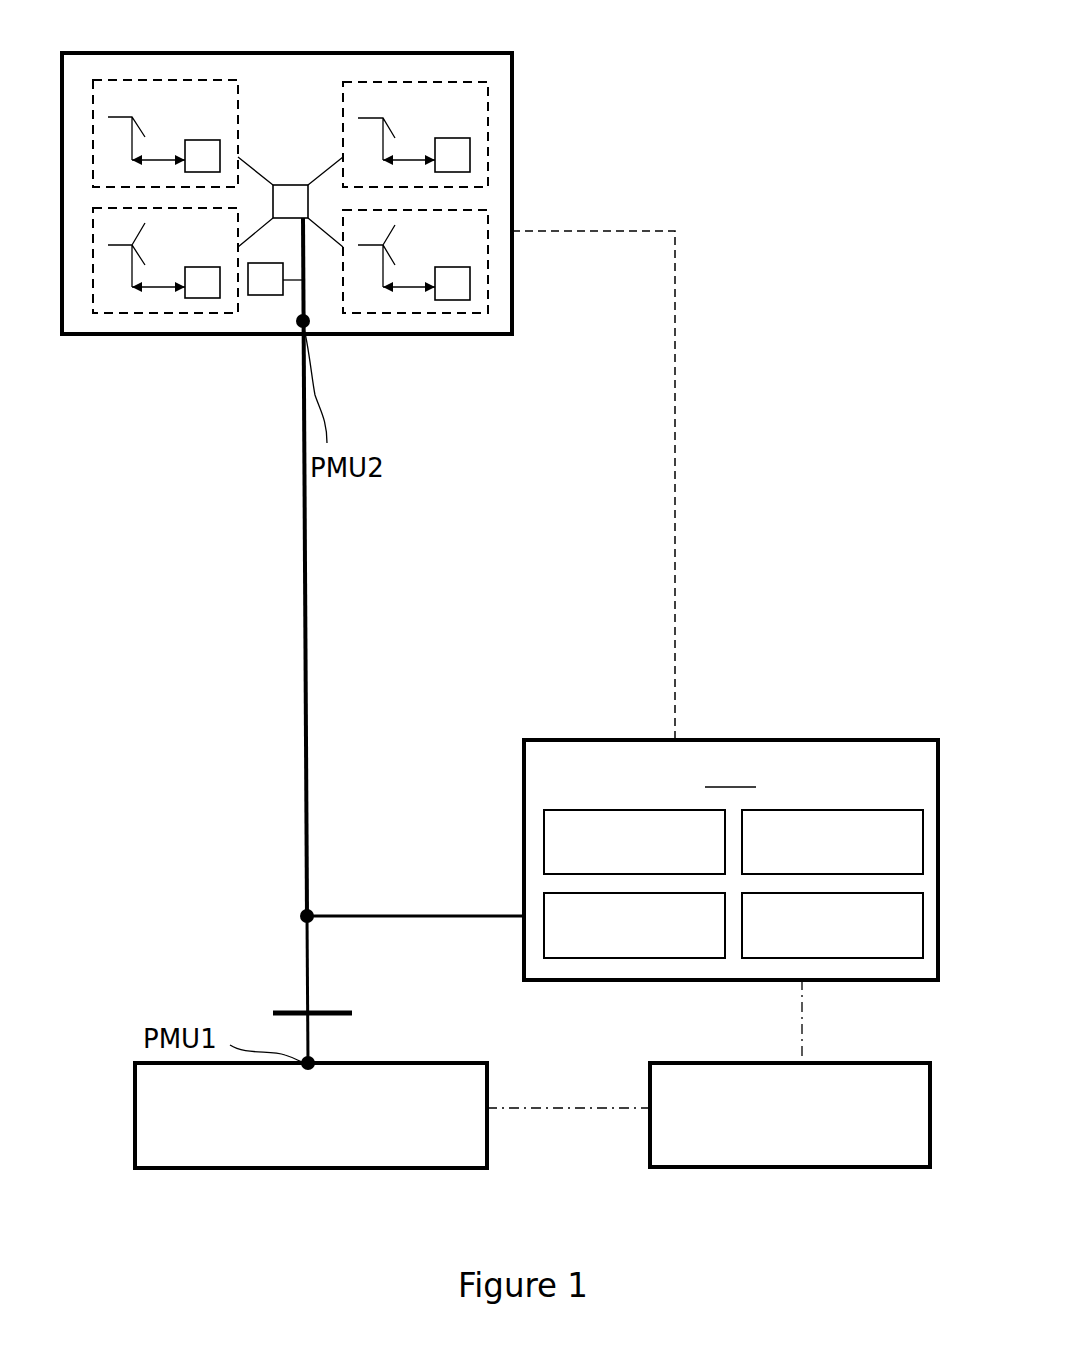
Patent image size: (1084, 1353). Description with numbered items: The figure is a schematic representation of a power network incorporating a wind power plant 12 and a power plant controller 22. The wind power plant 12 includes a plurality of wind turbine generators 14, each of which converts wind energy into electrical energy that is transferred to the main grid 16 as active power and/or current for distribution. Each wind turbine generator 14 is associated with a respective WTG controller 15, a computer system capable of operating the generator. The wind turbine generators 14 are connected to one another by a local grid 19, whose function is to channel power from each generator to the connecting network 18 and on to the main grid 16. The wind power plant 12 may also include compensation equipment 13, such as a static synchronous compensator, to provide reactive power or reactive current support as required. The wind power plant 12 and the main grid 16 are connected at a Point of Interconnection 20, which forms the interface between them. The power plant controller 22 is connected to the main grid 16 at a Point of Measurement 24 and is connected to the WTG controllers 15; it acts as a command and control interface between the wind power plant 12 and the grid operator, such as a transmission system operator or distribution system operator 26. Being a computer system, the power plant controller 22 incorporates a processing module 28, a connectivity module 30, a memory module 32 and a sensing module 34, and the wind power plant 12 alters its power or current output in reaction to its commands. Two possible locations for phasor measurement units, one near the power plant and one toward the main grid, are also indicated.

The wind power plant 12 is at (804, 200).
The compensation equipment 13 is at (265, 295).
The wind turbine generator 14 is at (132, 117).
The WTG controller 15 is at (203, 140).
The main grid 16 is at (365, 1168).
The connecting network 18 is at (305, 620).
The local grid 19 is at (290, 185).
The Point of Interconnection 20 is at (327, 1013).
The power plant controller 22 is at (836, 787).
The Point of Measurement 24 is at (297, 918).
The transmission system operator or distribution system operator 26 is at (650, 1140).
The processing module 28 is at (607, 810).
The connectivity module 30 is at (878, 810).
The memory module 32 is at (587, 958).
The sensing module 34 is at (773, 958).